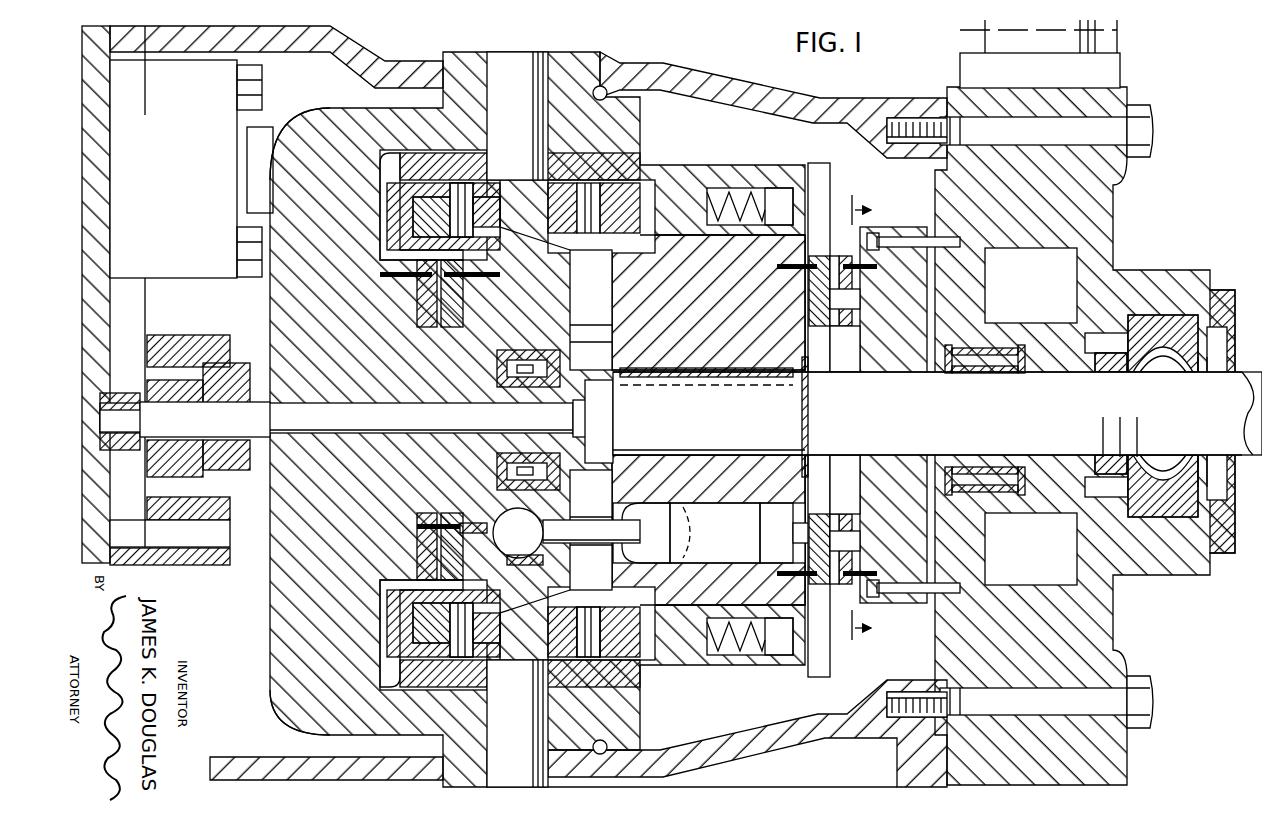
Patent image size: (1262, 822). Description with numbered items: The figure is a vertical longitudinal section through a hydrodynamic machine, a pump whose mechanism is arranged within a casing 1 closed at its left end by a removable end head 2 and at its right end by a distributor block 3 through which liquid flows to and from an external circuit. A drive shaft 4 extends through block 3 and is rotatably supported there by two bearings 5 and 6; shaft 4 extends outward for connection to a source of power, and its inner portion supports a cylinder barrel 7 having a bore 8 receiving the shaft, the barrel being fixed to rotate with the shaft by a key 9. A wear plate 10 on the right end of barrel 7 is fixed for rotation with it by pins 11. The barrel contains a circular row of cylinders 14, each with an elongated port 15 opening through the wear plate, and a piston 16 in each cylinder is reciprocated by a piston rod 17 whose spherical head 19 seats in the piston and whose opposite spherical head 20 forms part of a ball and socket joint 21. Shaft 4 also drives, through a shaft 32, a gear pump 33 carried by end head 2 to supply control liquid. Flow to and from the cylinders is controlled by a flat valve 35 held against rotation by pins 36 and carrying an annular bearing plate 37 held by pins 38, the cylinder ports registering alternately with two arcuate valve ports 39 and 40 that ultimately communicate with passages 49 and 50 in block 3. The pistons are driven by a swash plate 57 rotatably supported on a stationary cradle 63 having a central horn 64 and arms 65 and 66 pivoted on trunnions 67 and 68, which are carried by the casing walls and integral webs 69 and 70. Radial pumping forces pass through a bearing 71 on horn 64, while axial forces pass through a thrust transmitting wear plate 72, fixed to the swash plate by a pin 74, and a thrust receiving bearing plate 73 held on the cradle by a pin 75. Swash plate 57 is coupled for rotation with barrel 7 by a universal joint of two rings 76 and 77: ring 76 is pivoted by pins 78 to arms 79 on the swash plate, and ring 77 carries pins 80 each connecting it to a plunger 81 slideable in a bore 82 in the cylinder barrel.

The casing 1 is at (716, 78).
The end head 2 is at (104, 120).
The distributor block 3 is at (1122, 172).
The drive shaft 4 is at (1233, 405).
The bearing 5 is at (1180, 347).
The bearing 6 is at (998, 364).
The cylinder barrel 7 is at (699, 310).
The bore 8 is at (740, 455).
The key 9 is at (747, 380).
The wear plate 10 is at (820, 368).
The pins 11 is at (792, 272).
The cylinders 14 is at (772, 522).
The port 15 is at (808, 537).
The piston 16 is at (709, 547).
The piston rod 17 is at (581, 310).
The spherical head 19 is at (662, 530).
The spherical head 20 is at (507, 535).
The ball and socket joint 21 is at (563, 563).
The shaft 32 is at (266, 402).
The gear pump 33 is at (195, 333).
The flat valve 35 is at (905, 368).
The pins 36 is at (868, 241).
The bearing plate 37 is at (846, 470).
The pins 38 is at (862, 272).
The valve port 39 is at (858, 300).
The valve port 40 is at (860, 535).
The passage 49 is at (1014, 293).
The passage 50 is at (1014, 555).
The swash plate 57 is at (534, 246).
The cradle 63 is at (282, 676).
The horn 64 is at (470, 403).
The arm 65 is at (602, 716).
The arm 66 is at (606, 125).
The trunnion 67 is at (516, 733).
The trunnion 68 is at (516, 82).
The web 69 is at (645, 682).
The web 70 is at (641, 163).
The bearing 71 is at (545, 390).
The thrust transmitting wear plate 72 is at (462, 302).
The thrust receiving bearing plate 73 is at (433, 328).
The pin 74 is at (462, 275).
The pin 75 is at (398, 272).
The ring 76 is at (500, 641).
The ring 77 is at (560, 630).
The pins 78 is at (455, 232).
The arms 79 is at (388, 210).
The pins 80 is at (595, 232).
The plunger 81 is at (665, 190).
The bore 82 is at (781, 188).